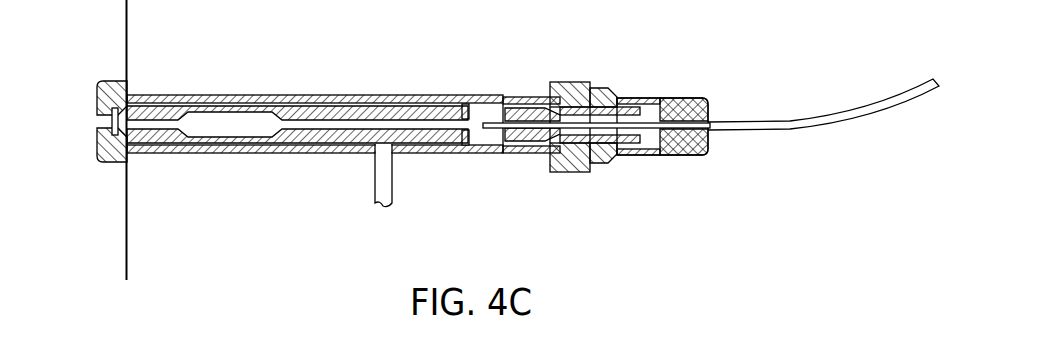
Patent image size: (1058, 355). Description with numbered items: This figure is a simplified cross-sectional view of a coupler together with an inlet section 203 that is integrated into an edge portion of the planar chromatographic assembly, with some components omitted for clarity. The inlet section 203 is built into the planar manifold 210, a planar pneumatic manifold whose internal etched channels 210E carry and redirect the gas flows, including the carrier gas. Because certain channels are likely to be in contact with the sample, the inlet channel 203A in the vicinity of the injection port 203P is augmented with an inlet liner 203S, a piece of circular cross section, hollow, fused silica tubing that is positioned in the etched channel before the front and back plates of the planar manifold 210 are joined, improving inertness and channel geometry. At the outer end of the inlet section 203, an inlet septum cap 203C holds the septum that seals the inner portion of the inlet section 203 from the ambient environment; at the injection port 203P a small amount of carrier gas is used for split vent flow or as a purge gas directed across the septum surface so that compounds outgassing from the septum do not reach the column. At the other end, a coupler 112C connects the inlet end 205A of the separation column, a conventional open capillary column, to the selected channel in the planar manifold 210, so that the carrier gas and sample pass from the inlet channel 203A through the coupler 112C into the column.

The inlet section 203 is at (295, 58).
The inlet septum cap 203C is at (97, 84).
The injection port 203P is at (94, 125).
The inlet liner 203S is at (440, 104).
The inlet channel 203A is at (462, 157).
The planar manifold 210 is at (240, 215).
The etched channels 210E is at (373, 182).
The coupler 112C is at (651, 98).
The inlet end 205A is at (775, 132).